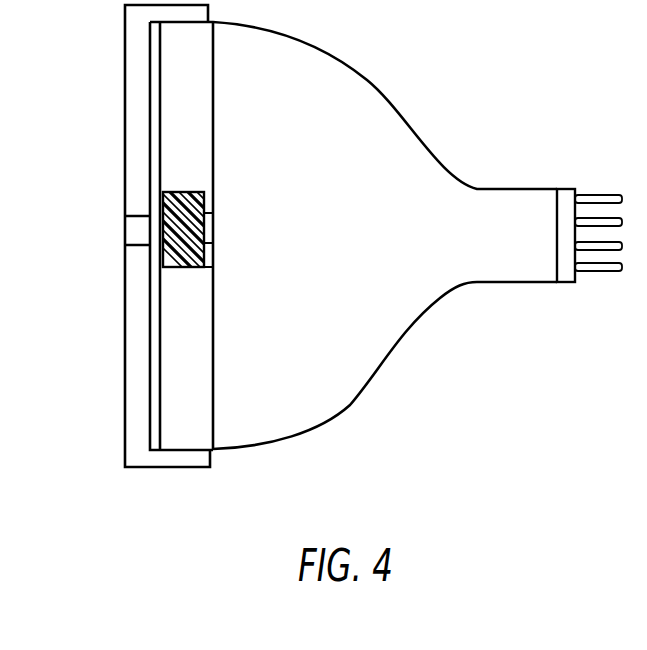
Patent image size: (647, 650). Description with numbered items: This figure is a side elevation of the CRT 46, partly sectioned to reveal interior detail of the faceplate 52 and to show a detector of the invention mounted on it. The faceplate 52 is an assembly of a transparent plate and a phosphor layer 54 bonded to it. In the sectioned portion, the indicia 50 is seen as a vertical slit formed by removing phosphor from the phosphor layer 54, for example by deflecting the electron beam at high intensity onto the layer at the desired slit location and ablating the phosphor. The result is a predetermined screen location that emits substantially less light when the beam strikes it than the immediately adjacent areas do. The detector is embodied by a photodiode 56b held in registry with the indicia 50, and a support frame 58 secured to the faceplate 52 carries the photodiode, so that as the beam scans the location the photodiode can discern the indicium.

The CRT 46 is at (368, 80).
The indicia 50 is at (209, 232).
The faceplate 52 is at (187, 203).
The phosphor layer 54 is at (210, 255).
The photodiode 56b is at (132, 232).
The support frame 58 is at (130, 447).